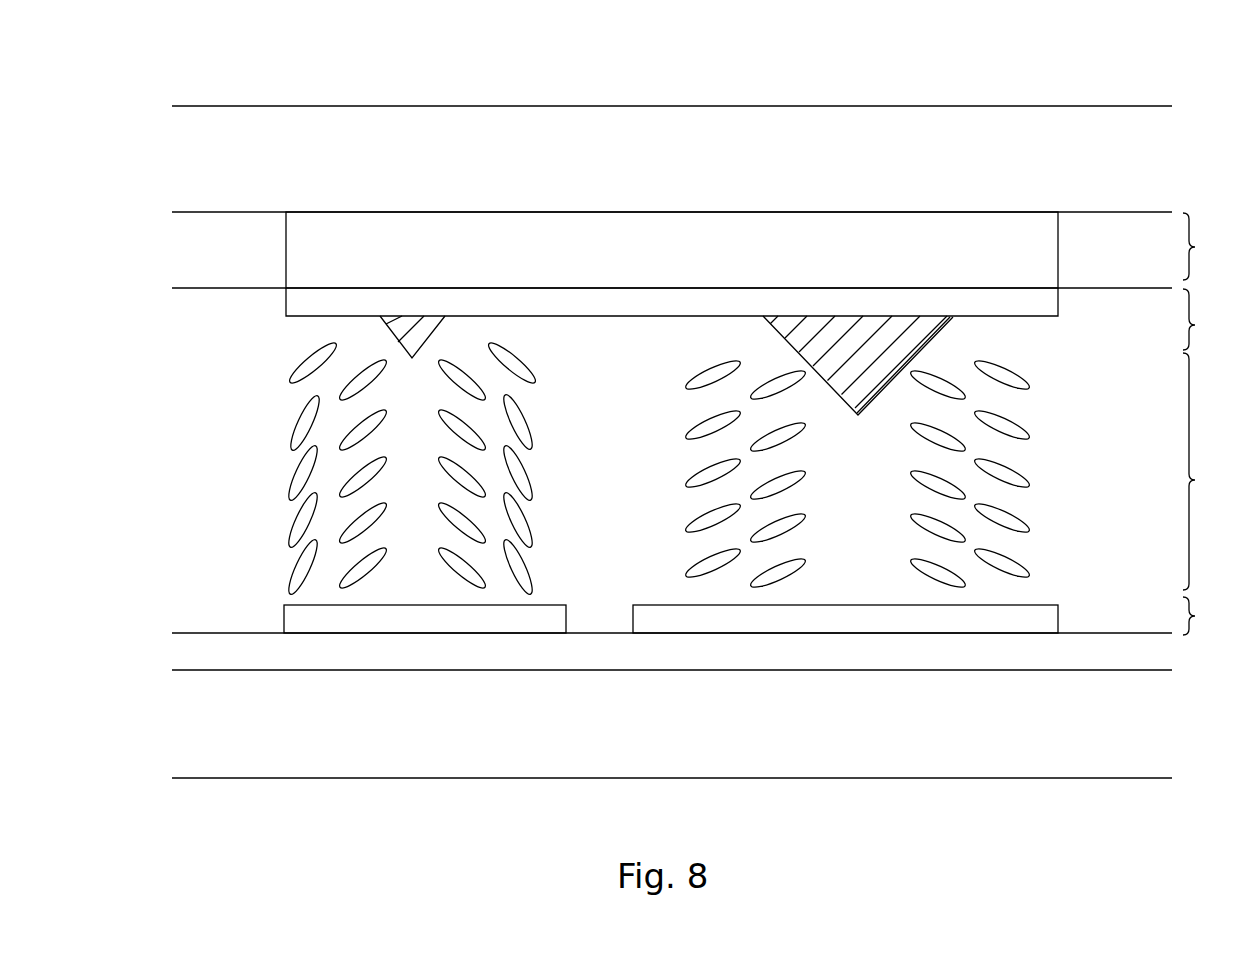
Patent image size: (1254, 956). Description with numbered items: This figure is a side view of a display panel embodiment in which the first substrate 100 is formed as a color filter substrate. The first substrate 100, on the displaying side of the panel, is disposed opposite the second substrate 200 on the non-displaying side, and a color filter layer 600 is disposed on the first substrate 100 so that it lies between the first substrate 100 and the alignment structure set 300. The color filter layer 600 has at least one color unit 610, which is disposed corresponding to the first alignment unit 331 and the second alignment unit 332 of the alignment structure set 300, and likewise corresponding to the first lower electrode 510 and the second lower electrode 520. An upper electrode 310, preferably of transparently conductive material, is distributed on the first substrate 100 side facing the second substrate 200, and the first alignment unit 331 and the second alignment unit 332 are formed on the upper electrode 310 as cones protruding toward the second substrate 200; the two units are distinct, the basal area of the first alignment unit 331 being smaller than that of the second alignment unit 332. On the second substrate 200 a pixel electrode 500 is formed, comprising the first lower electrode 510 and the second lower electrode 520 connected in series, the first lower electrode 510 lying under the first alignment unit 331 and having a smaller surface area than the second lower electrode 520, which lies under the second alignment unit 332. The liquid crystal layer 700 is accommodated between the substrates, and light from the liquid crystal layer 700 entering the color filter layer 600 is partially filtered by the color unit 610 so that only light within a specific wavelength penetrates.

The first substrate 100 is at (507, 132).
The second substrate 200 is at (937, 764).
The alignment structure set 300 is at (706, 319).
The upper electrode 310 is at (297, 301).
The first alignment unit 331 is at (397, 325).
The second alignment unit 332 is at (783, 323).
The pixel electrode 500 is at (706, 616).
The first lower electrode 510 is at (298, 621).
The second lower electrode 520 is at (647, 619).
The color filter layer 600 is at (1211, 246).
The color unit 610 is at (860, 247).
The liquid crystal layer 700 is at (762, 467).